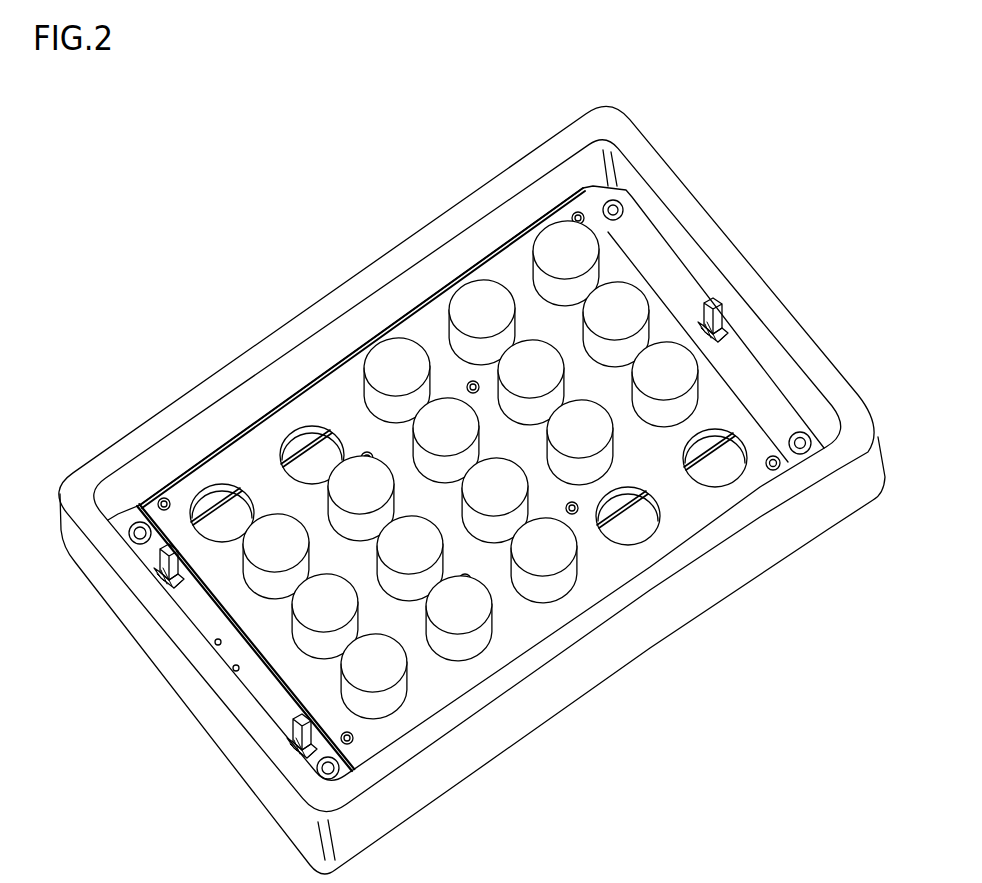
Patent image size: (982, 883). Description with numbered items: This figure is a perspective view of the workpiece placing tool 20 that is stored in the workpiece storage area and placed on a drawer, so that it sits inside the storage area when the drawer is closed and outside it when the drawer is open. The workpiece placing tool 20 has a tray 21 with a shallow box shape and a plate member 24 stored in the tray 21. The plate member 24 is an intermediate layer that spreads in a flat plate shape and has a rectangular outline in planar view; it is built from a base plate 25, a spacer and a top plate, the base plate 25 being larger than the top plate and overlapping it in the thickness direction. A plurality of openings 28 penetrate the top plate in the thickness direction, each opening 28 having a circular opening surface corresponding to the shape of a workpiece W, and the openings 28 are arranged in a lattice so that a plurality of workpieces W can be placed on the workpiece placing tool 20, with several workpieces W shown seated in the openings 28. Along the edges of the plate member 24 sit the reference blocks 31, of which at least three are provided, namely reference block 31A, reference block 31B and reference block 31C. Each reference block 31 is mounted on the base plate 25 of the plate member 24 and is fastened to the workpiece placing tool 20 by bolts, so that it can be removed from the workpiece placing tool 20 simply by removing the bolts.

The workpiece placing tool 20 is at (484, 132).
The tray 21 is at (818, 368).
The plate member 24 is at (462, 473).
The base plate 25 is at (200, 614).
The opening 28 is at (305, 430).
The reference block 31 is at (465, 504).
The reference block 31A is at (710, 302).
The reference block 31B is at (148, 510).
The reference block 31C is at (283, 703).
The workpiece W is at (580, 250).